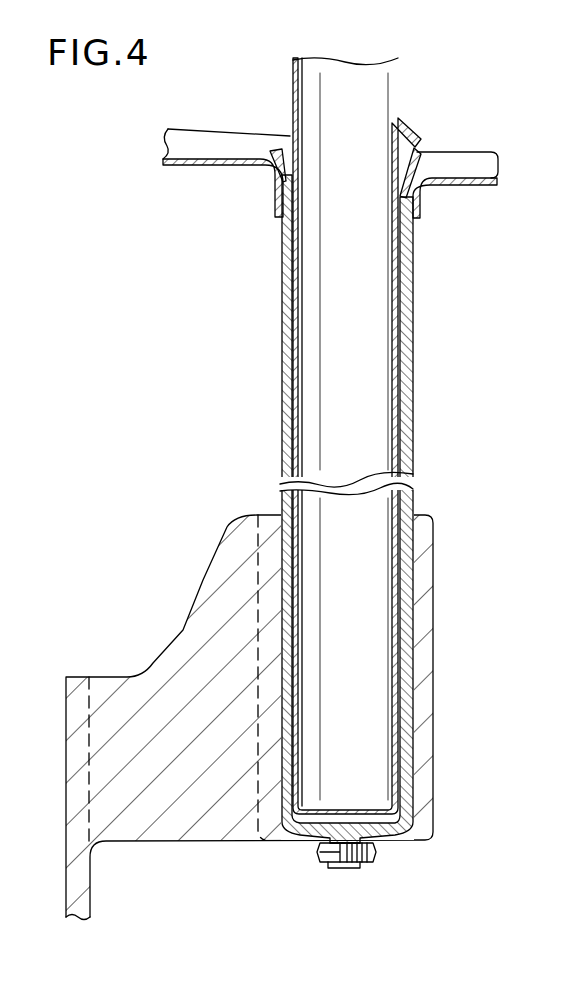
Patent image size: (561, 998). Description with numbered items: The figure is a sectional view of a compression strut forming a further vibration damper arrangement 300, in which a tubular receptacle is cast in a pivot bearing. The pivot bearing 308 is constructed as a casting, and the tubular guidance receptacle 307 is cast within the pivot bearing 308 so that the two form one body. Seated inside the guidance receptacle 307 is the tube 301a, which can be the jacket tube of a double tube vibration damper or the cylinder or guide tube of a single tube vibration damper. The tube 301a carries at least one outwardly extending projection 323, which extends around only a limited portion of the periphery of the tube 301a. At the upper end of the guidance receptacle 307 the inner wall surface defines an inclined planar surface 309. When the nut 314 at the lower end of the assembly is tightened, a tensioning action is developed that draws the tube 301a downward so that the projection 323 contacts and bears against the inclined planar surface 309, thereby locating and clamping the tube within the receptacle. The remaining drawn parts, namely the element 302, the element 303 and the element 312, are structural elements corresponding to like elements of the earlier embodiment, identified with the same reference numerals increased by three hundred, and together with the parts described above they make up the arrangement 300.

The vibration damper arrangement 300 is at (187, 318).
The inner tube 302 is at (290, 82).
The tube 301a is at (400, 90).
The outwardly extending projection 323 is at (417, 141).
The inclined planar surface 309 is at (423, 188).
The tubular guidance receptacle 307 is at (403, 500).
The pivot bearing 308 is at (420, 662).
The housing 303 is at (181, 631).
The threaded stud 312 is at (313, 863).
The nut 314 is at (376, 852).